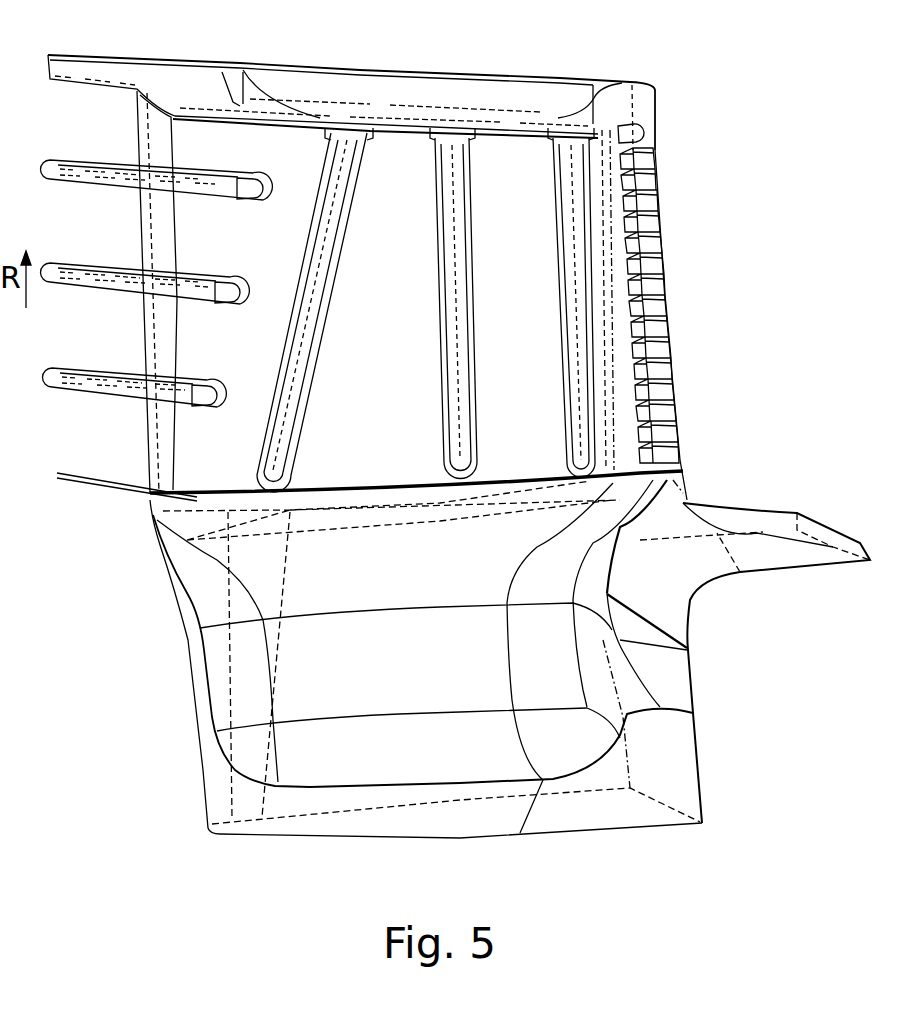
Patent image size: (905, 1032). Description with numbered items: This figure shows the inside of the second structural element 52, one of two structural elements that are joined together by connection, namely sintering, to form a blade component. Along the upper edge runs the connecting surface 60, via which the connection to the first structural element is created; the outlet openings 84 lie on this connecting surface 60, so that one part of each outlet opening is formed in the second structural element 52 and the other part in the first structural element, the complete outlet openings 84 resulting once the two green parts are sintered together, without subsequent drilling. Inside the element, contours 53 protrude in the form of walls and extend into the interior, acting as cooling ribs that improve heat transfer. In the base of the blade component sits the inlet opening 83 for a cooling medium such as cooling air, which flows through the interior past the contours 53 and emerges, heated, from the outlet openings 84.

The second structural element 52 is at (697, 239).
The contours 53 is at (338, 243).
The connecting surface 60 is at (652, 100).
The inlet opening 83 is at (698, 681).
The outlet openings 84 is at (655, 176).